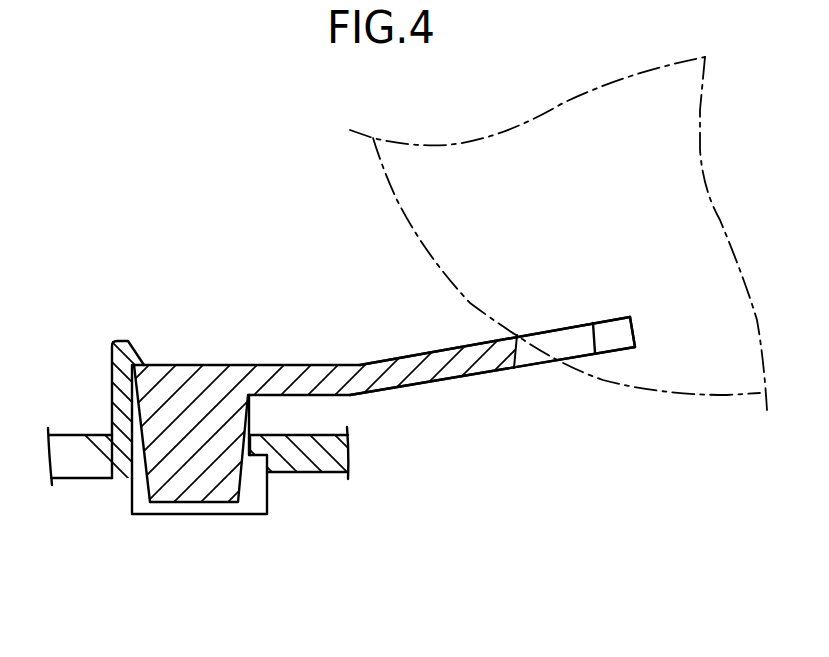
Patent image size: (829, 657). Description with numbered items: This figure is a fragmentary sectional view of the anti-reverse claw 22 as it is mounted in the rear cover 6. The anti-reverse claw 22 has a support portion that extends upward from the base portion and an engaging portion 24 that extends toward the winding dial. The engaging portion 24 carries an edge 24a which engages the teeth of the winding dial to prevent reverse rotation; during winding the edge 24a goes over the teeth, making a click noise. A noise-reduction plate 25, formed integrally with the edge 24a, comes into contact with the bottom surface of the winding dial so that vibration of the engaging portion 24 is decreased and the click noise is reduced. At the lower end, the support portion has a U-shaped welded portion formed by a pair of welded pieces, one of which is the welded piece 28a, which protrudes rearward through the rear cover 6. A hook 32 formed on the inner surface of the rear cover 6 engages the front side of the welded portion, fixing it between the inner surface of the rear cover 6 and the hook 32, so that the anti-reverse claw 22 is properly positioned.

The rear cover 6 is at (333, 474).
The anti-reverse claw 22 is at (268, 362).
The engaging portion 24 is at (455, 380).
The edge 24a is at (516, 335).
The noise-reduction plate 25 is at (610, 353).
The welded piece 28a is at (192, 502).
The hook 32 is at (143, 362).